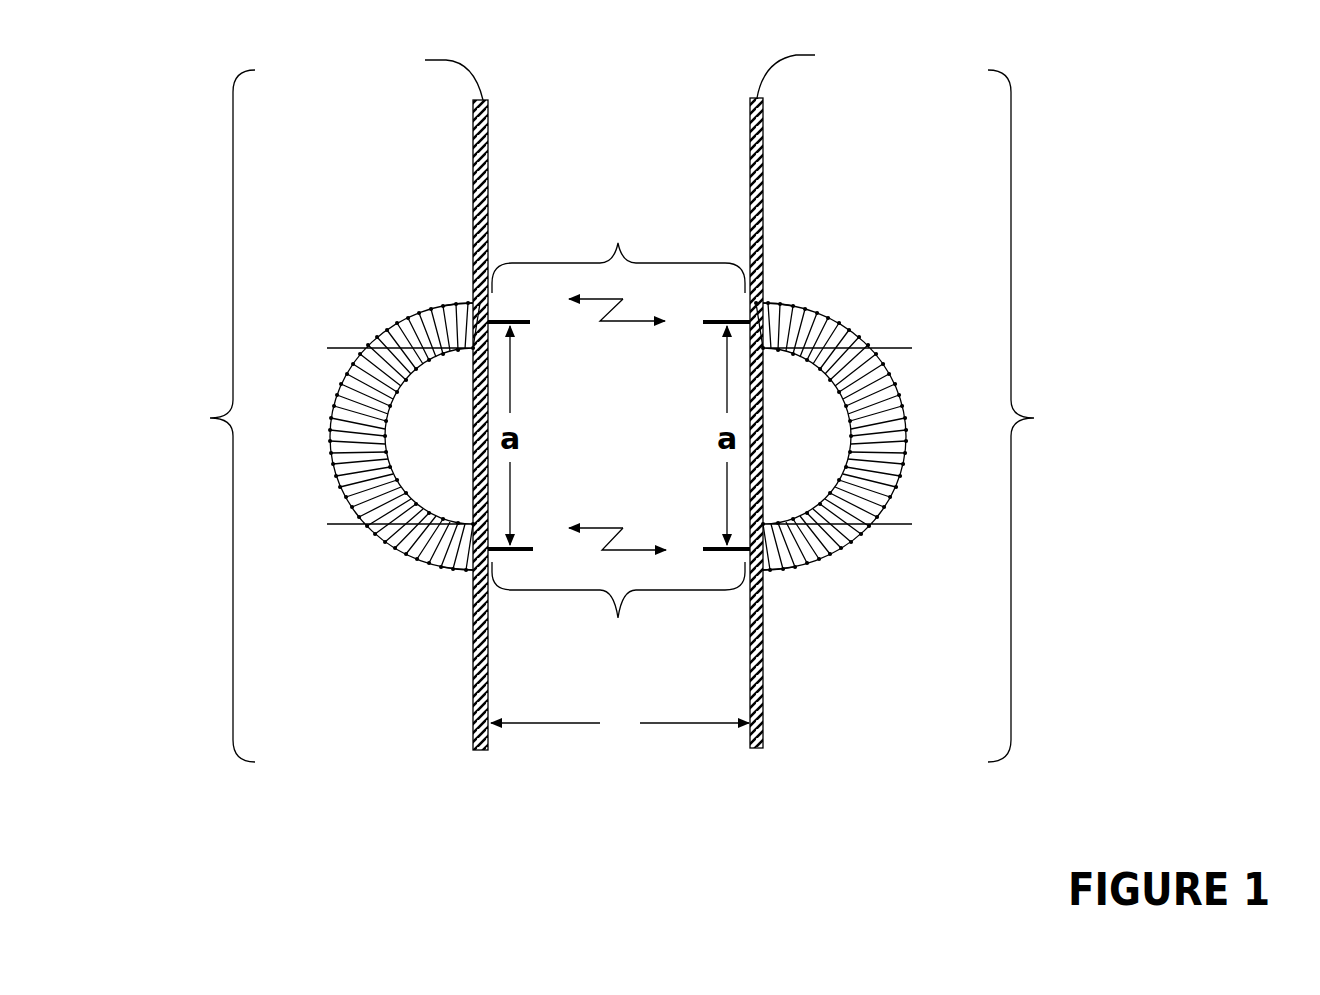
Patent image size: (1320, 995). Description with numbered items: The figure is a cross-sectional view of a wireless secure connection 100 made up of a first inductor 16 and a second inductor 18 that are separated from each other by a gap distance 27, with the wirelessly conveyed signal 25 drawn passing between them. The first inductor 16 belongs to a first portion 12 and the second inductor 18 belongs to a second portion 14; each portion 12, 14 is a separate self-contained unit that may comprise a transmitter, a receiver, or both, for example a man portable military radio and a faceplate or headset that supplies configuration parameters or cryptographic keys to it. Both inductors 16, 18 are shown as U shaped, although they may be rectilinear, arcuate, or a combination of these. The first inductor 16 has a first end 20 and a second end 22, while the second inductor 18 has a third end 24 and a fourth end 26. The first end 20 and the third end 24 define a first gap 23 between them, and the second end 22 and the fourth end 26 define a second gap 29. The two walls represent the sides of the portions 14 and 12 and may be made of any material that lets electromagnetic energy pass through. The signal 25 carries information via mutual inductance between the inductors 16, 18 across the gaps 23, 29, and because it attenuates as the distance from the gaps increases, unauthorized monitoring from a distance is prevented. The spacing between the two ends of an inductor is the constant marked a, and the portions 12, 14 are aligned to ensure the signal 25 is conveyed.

The wireless secure connection 100 is at (630, 37).
The first portion 12 is at (1049, 416).
The second portion 14 is at (191, 416).
The first inductor 16 is at (828, 322).
The second inductor 18 is at (388, 332).
The first end 20 is at (766, 286).
The second end 22 is at (767, 582).
The first gap 23 is at (618, 244).
The third end 24 is at (461, 282).
The wirelessly conveyed signal 25 is at (647, 321).
The fourth end 26 is at (459, 586).
The gap distance 27 is at (620, 723).
The second gap 29 is at (618, 614).